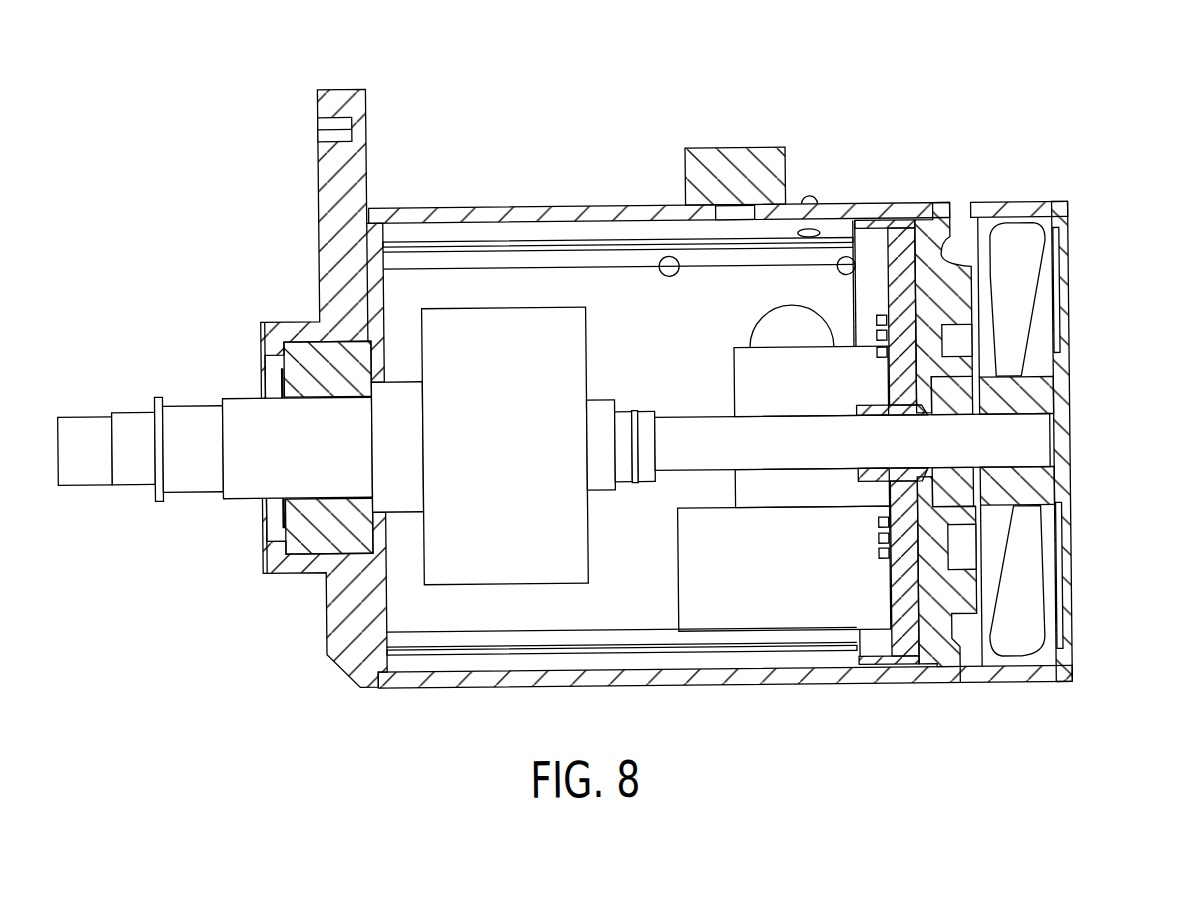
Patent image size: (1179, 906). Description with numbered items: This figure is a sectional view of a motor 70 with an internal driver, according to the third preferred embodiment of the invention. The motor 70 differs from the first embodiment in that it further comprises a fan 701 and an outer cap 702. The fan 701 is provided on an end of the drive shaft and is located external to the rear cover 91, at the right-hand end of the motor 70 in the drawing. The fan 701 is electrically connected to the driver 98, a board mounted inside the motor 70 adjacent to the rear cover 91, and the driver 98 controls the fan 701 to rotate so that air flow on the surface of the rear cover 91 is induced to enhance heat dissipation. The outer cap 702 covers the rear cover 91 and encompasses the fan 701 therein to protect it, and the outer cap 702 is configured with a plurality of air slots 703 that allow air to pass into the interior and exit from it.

The motor 70 is at (611, 353).
The rear cover 91 is at (944, 208).
The driver 98 is at (900, 308).
The fan 701 is at (1003, 227).
The outer cap 702 is at (1069, 218).
The air slots 703 is at (1069, 303).